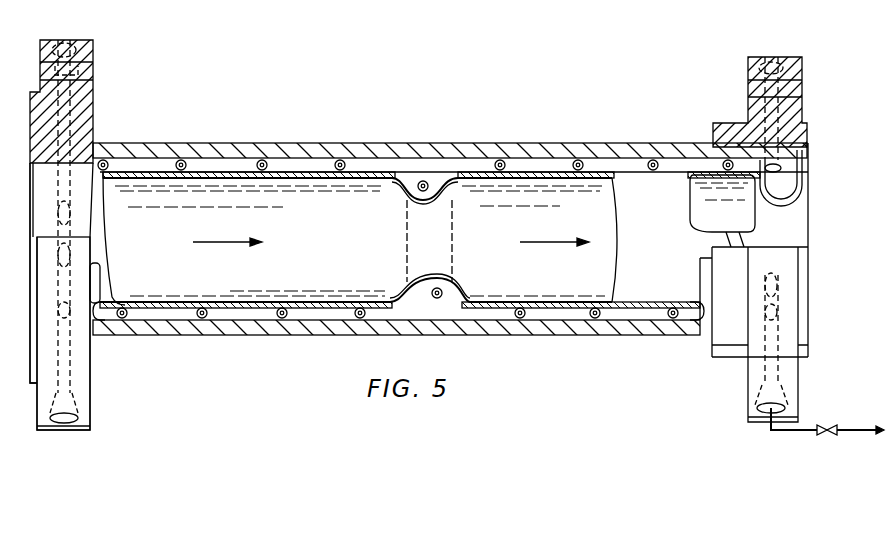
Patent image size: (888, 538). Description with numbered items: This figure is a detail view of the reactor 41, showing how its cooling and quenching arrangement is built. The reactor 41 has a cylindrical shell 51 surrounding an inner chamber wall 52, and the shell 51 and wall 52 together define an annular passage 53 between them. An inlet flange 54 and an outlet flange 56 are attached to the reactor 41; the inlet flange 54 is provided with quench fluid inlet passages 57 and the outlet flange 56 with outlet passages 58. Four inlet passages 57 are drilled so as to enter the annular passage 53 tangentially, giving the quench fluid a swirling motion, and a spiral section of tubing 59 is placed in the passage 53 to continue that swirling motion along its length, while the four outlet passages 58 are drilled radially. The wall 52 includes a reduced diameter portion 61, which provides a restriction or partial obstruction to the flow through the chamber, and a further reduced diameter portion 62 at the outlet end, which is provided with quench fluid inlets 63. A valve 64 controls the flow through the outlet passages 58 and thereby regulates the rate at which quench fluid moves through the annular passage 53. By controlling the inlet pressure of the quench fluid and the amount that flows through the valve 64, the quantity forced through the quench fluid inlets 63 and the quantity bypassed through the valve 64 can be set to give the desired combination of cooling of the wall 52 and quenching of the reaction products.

The reactor 41 is at (262, 138).
The cylindrical shell 51 is at (545, 151).
The inner chamber wall 52 is at (281, 301).
The annular passage 53 is at (440, 176).
The inlet flange 54 is at (90, 372).
The outlet flange 56 is at (748, 383).
The quench fluid inlet passages 57 is at (78, 410).
The outlet passages 58 is at (750, 394).
The spiral section of tubing 59 is at (206, 319).
The reduced diameter portion 61 is at (438, 200).
The reduced diameter portion at the outlet end 62 is at (756, 206).
The quench fluid inlets 63 is at (806, 209).
The valve 64 is at (827, 425).